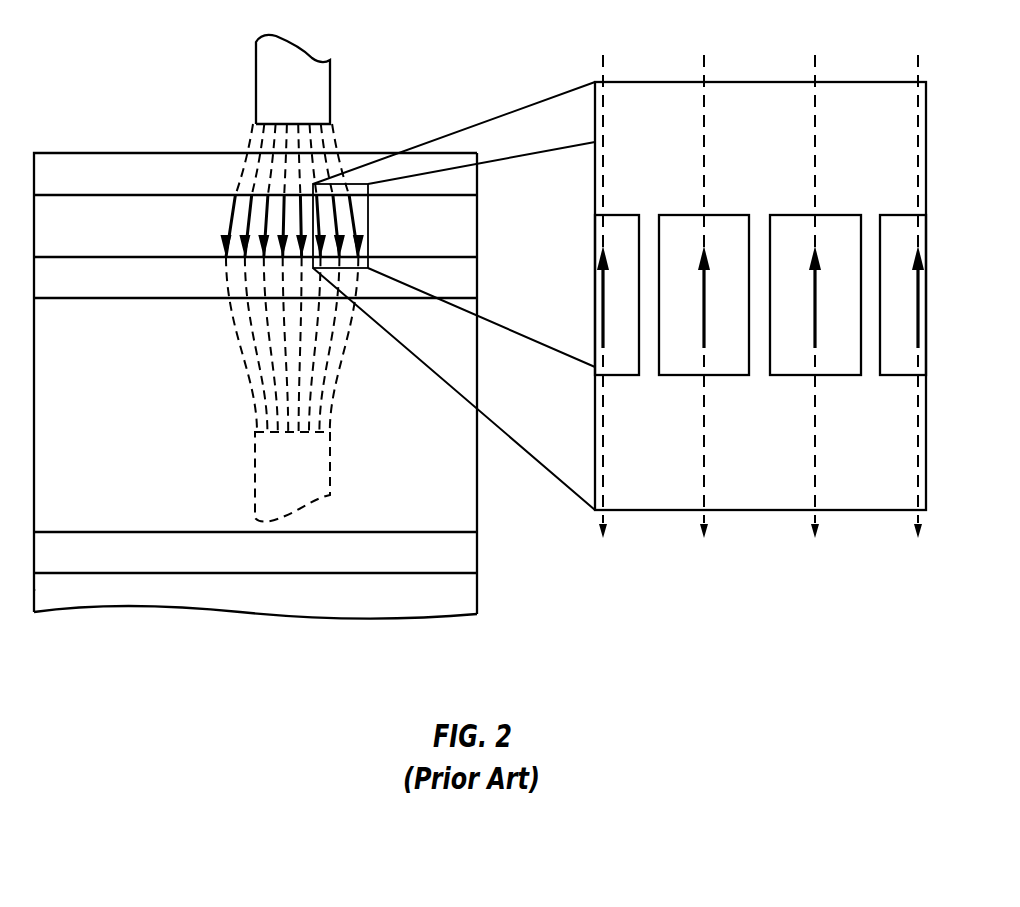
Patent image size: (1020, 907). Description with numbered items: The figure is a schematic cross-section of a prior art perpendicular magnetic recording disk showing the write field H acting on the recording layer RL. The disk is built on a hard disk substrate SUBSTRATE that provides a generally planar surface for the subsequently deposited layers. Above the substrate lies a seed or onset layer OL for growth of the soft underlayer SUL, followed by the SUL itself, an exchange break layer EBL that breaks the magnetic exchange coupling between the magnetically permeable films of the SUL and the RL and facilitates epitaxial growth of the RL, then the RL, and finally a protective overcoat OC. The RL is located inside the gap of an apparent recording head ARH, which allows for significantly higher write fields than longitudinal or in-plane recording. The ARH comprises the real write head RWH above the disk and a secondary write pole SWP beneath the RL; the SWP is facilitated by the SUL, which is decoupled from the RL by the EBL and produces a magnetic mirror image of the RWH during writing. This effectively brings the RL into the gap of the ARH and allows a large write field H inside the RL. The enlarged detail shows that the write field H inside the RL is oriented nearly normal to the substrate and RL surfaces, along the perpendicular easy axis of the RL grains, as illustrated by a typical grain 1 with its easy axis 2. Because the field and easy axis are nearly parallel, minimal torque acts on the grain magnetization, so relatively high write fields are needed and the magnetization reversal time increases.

The typical grain 1 is at (797, 222).
The easy axis 2 is at (815, 338).
The apparent recording head ARH is at (243, 418).
The real write head RWH is at (293, 79).
The protective overcoat OC is at (255, 177).
The recording layer RL is at (255, 238).
The exchange break layer EBL is at (255, 280).
The soft underlayer SUL is at (255, 465).
The secondary write pole SWP is at (292, 477).
The onset layer OL is at (255, 555).
The hard disk substrate SUBSTRATE is at (109, 594).
The write field H is at (760, 316).